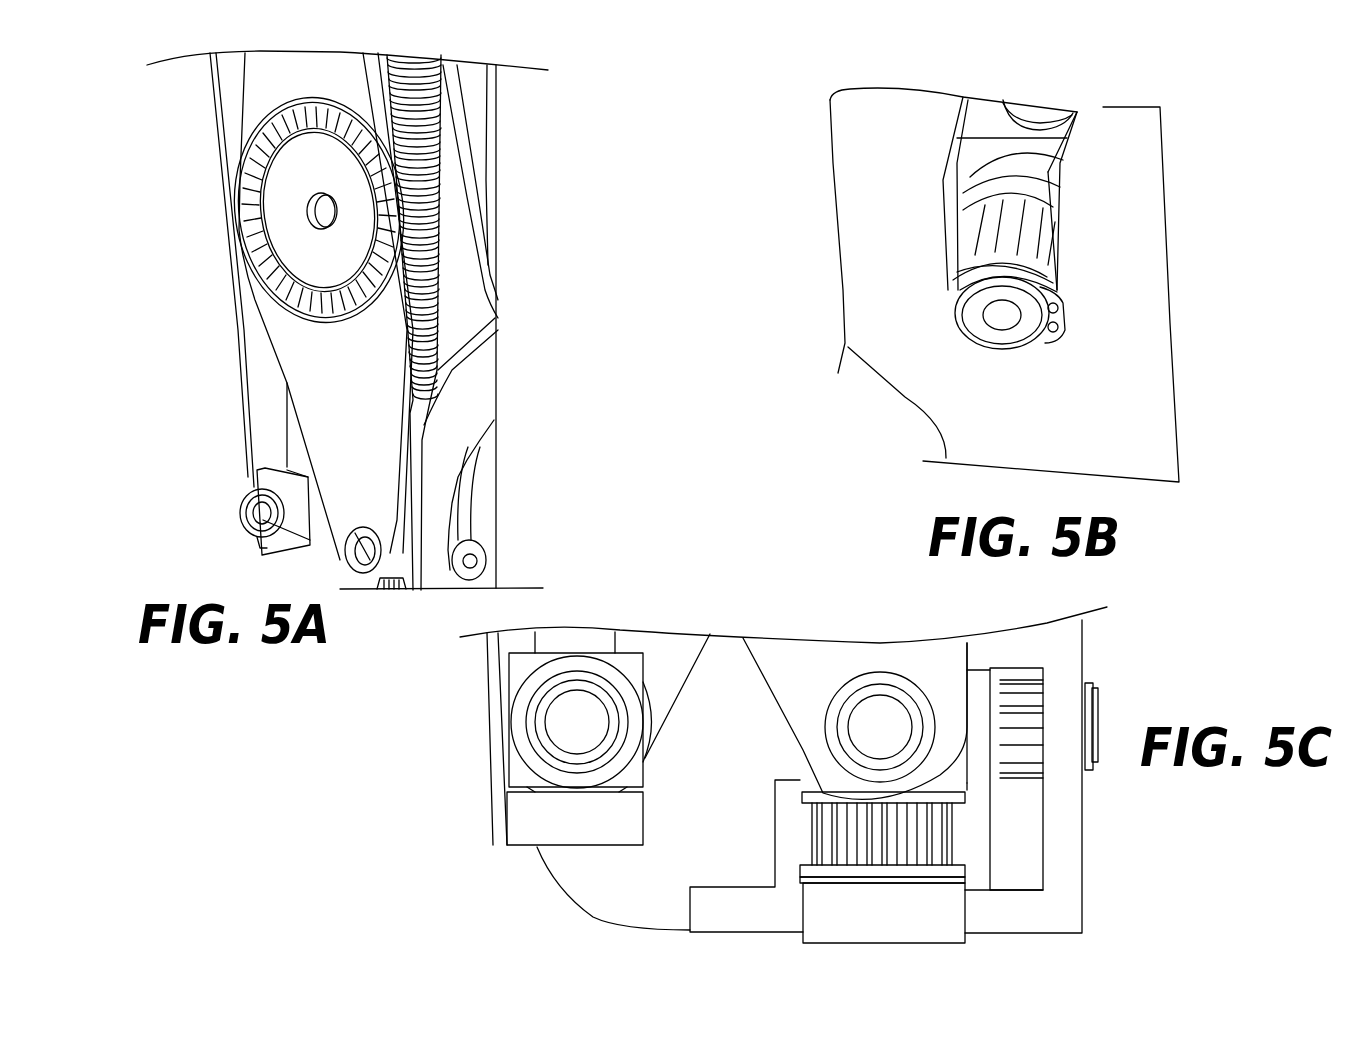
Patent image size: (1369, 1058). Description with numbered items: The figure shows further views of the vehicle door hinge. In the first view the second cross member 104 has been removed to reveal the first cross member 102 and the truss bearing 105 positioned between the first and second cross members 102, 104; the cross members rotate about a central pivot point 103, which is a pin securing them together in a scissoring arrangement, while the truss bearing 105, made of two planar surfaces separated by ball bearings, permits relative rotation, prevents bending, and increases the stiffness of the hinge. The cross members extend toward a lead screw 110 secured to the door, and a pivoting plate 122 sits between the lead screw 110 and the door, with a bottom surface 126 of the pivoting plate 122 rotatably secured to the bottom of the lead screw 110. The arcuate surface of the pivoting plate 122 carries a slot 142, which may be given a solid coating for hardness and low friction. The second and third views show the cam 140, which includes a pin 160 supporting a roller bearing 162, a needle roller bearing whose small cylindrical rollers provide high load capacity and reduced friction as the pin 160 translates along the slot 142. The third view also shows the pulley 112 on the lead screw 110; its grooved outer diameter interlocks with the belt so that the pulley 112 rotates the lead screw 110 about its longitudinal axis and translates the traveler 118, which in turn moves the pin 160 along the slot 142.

In FIG. 5A, the first cross member 102 is at (358, 400).
In FIG. 5C, the first cross member 102 is at (821, 679).
In FIG. 5A, the central pivot point 103 is at (318, 204).
In FIG. 5C, the second cross member 104 is at (681, 667).
In FIG. 5A, the truss bearing 105 is at (260, 240).
In FIG. 5A, the lead screw 110 is at (437, 198).
In FIG. 5C, the pulley 112 is at (947, 830).
In FIG. 5B, the traveler 118 is at (977, 147).
In FIG. 5A, the pivoting plate 122 is at (522, 353).
In FIG. 5B, the pivoting plate 122 is at (908, 234).
In FIG. 5C, the pivoting plate 122 is at (1096, 920).
In FIG. 5C, the bottom surface 126 is at (995, 917).
In FIG. 5A, the cam 140 is at (489, 534).
In FIG. 5B, the cam 140 is at (1080, 258).
In FIG. 5C, the cam 140 is at (1106, 650).
In FIG. 5A, the slot 142 is at (516, 435).
In FIG. 5B, the slot 142 is at (947, 117).
In FIG. 5B, the pin 160 is at (1030, 330).
In FIG. 5C, the pin 160 is at (1097, 717).
In FIG. 5B, the roller bearing 162 is at (1035, 228).
In FIG. 5C, the roller bearing 162 is at (1033, 757).